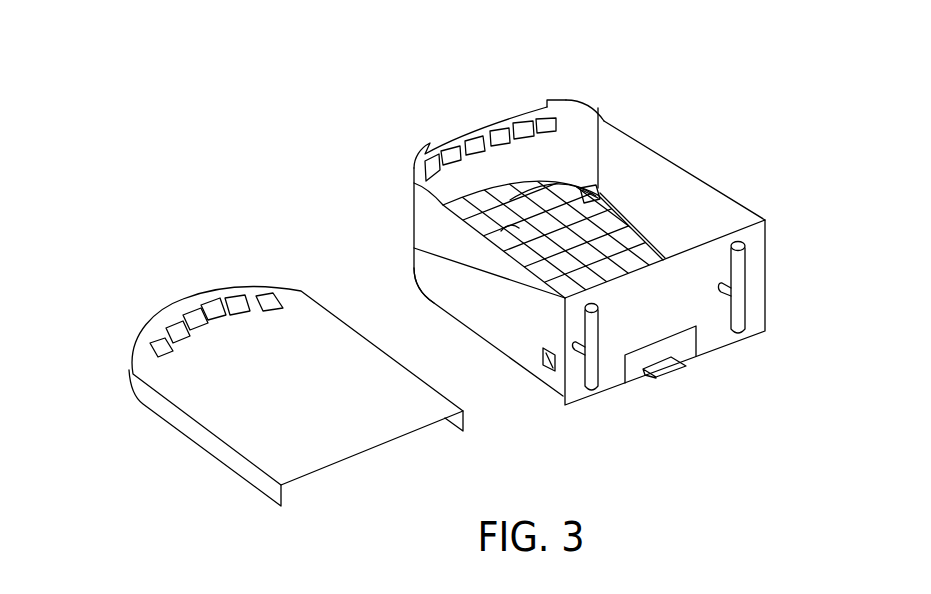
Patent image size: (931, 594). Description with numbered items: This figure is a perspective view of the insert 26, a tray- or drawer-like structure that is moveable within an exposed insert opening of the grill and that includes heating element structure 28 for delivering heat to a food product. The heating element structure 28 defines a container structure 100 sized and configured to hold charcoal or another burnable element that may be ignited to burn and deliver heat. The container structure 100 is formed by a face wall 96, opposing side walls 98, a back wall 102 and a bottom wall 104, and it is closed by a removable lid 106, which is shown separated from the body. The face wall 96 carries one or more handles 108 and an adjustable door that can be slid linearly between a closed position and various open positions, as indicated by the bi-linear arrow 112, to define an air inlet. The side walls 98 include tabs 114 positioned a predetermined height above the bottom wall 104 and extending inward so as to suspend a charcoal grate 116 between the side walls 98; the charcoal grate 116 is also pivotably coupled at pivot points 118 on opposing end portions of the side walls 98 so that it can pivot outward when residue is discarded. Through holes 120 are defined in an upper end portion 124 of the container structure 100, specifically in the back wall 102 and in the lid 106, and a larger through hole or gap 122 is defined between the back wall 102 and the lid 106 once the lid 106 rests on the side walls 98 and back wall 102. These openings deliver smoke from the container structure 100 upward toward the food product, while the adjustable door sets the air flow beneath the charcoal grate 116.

The insert 26 is at (767, 158).
The heating element structure 28 is at (556, 163).
The face wall 96 is at (707, 312).
The side walls 98 is at (704, 186).
The container structure 100 is at (630, 133).
The back wall 102 is at (553, 148).
The bottom wall 104 is at (550, 271).
The removable lid 106 is at (303, 319).
The handles 108 is at (741, 277).
The bi-linear arrow 112 is at (672, 380).
The tabs 114 is at (600, 188).
The charcoal grate 116 is at (417, 281).
The pivot points 118 is at (553, 368).
The through holes 120 is at (497, 133).
The gap 122 is at (551, 109).
The upper end portion 124 is at (398, 172).